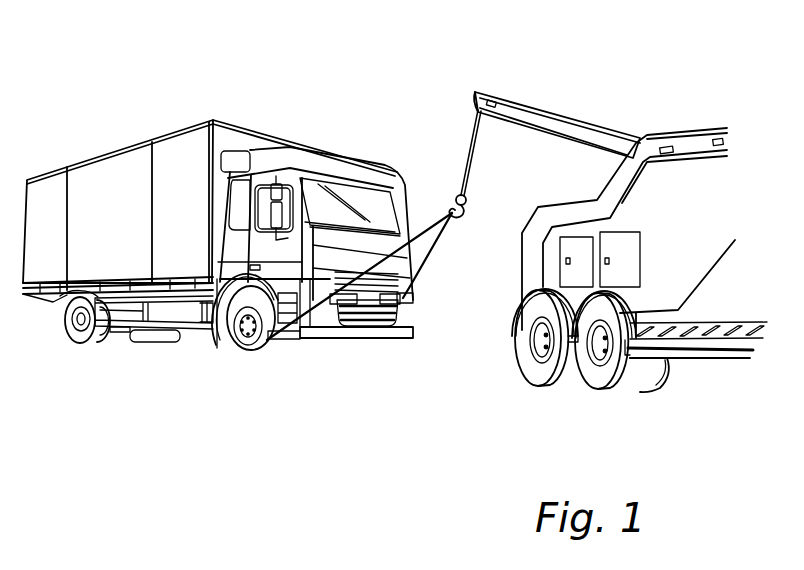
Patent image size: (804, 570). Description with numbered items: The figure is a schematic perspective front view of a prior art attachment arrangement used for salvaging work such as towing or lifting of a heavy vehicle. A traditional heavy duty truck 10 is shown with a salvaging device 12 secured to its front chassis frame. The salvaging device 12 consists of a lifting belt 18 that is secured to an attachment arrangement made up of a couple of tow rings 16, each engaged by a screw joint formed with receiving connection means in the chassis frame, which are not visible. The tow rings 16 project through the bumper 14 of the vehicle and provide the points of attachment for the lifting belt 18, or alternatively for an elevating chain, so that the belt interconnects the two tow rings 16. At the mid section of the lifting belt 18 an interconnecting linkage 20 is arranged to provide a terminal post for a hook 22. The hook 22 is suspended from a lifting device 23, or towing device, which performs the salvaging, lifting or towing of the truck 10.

The heavy duty truck 10 is at (350, 94).
The salvaging device 12 is at (436, 301).
The bumper 14 is at (275, 338).
The tow rings 16 is at (329, 305).
The lifting belt 18 is at (414, 233).
The interconnecting linkage 20 is at (456, 233).
The hook 22 is at (458, 226).
The lifting device 23 is at (545, 84).